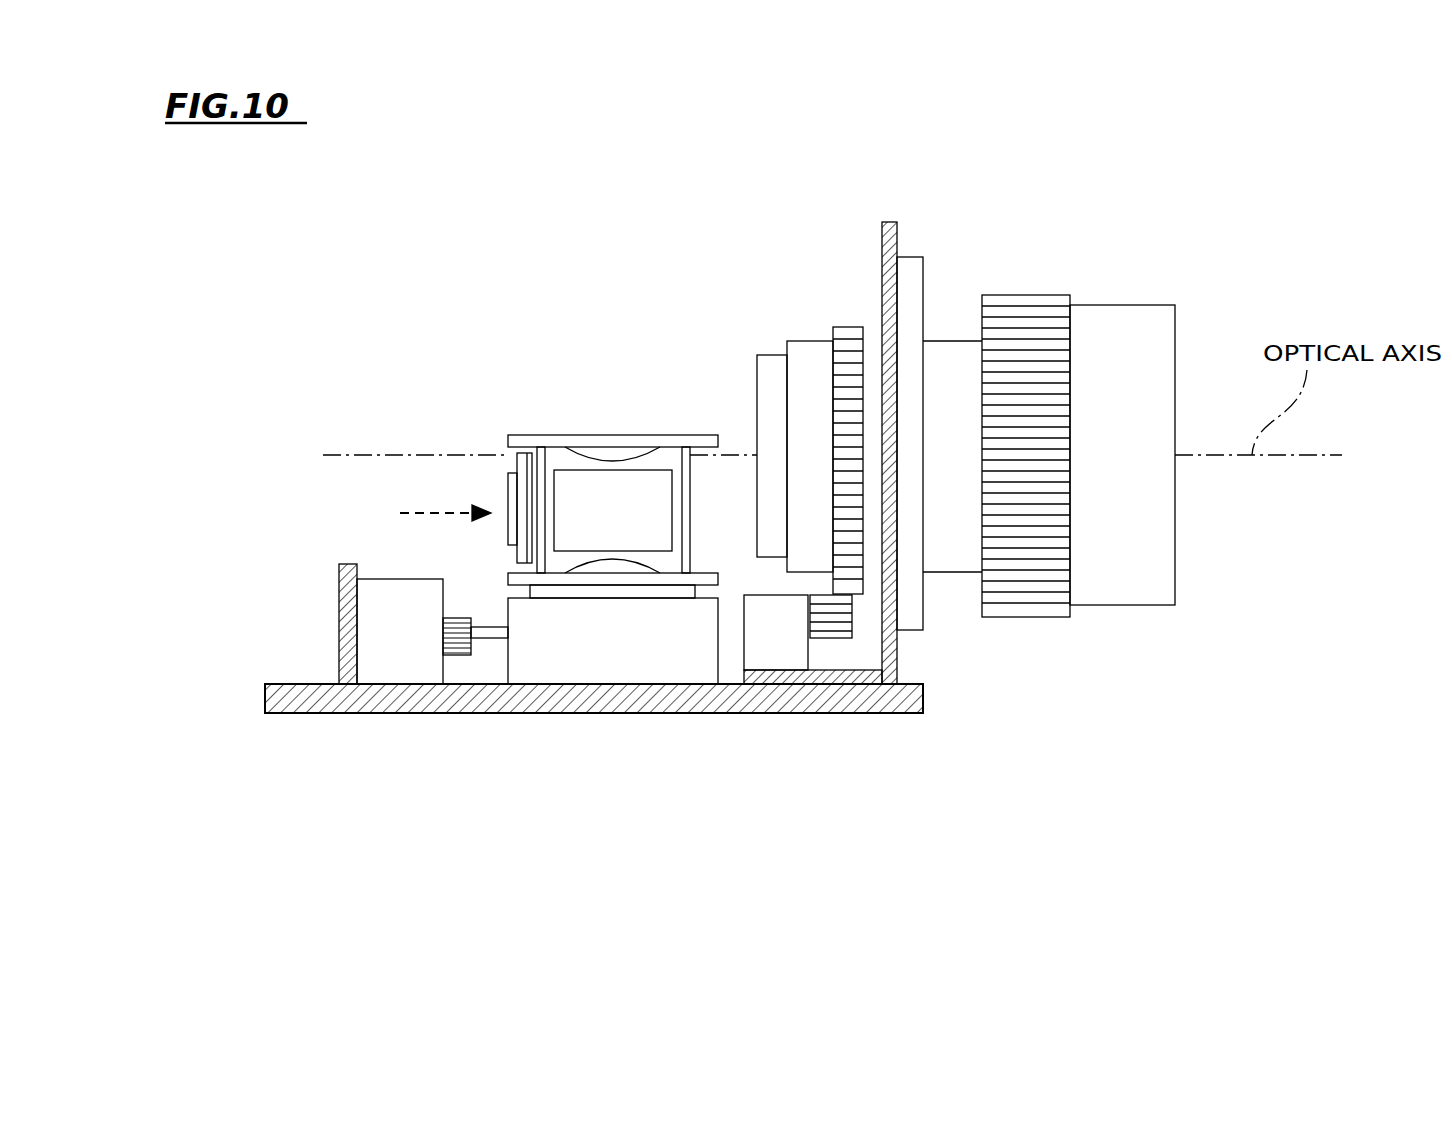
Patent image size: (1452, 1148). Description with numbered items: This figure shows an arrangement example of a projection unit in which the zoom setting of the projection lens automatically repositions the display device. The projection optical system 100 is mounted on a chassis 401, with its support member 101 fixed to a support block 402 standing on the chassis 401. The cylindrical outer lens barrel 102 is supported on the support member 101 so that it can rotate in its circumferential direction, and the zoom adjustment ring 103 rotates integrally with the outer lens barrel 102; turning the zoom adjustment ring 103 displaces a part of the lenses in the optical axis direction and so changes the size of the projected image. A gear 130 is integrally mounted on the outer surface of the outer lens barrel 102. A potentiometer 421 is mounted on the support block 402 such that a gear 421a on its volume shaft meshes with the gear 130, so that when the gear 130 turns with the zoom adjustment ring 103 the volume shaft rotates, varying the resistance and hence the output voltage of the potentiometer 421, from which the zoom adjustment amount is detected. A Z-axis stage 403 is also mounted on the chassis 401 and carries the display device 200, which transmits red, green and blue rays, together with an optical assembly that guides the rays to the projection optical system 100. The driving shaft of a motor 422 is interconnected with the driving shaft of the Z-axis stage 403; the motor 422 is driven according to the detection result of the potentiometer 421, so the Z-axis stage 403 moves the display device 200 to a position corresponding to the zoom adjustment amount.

The projection optical system 100 is at (1145, 617).
The support member 101 is at (907, 257).
The cylindrical outer lens barrel 102 is at (940, 572).
The zoom adjustment ring 103 is at (1027, 293).
The gear 130 is at (843, 325).
The display device 200 is at (608, 505).
The chassis 401 is at (383, 713).
The support block 402 is at (873, 713).
The Z-axis stage 403 is at (593, 655).
The potentiometer 421 is at (773, 657).
The gear 421a is at (838, 637).
The motor 422 is at (390, 578).